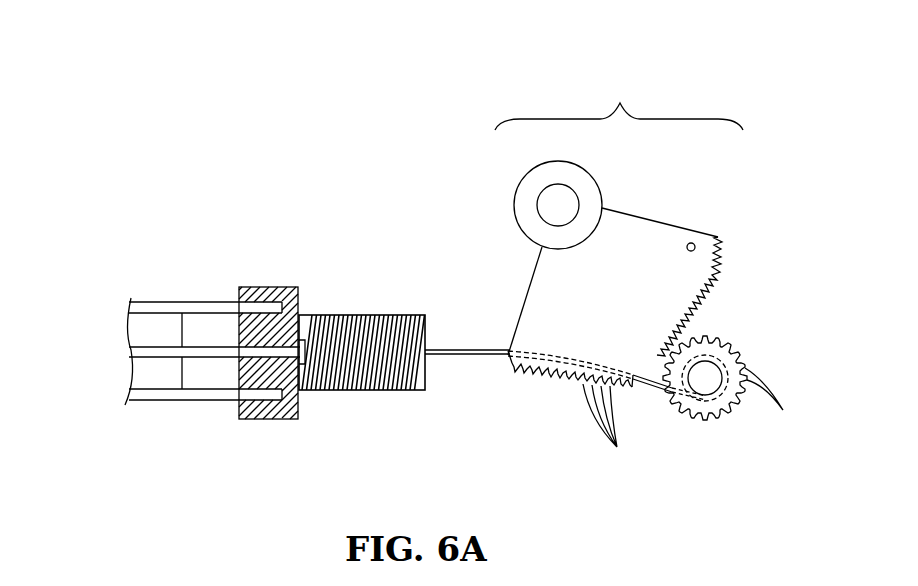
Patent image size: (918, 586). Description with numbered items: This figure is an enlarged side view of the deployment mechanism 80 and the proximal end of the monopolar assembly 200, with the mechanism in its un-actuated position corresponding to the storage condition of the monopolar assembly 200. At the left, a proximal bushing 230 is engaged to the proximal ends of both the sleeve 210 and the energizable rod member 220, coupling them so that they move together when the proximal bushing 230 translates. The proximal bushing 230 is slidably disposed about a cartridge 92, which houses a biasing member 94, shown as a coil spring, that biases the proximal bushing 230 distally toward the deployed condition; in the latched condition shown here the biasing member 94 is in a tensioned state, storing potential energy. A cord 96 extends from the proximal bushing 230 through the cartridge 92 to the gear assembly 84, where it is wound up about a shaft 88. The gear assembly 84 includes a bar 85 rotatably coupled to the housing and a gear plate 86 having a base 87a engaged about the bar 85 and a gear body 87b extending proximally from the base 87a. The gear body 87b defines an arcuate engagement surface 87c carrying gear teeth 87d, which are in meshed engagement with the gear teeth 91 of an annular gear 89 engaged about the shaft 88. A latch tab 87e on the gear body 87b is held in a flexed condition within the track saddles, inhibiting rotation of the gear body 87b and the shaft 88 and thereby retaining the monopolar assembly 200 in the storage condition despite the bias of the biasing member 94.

The deployment mechanism 80 is at (406, 138).
The gear assembly 84 is at (619, 101).
The bar 85 is at (558, 197).
The gear plate 86 is at (520, 277).
The base 87a is at (522, 203).
The gear body 87b is at (545, 310).
The arcuate engagement surface 87c is at (555, 392).
The gear teeth 87d is at (617, 447).
The latch tab 87e is at (693, 243).
The shaft 88 is at (705, 387).
The annular gear 89 is at (730, 345).
The gear teeth 91 is at (780, 397).
The cartridge 92 is at (383, 392).
The biasing member 94 is at (367, 315).
The cord 96 is at (475, 357).
The monopolar assembly 200 is at (195, 250).
The sleeve 210 is at (167, 403).
The energizable rod member 220 is at (215, 347).
The proximal bushing 230 is at (290, 403).